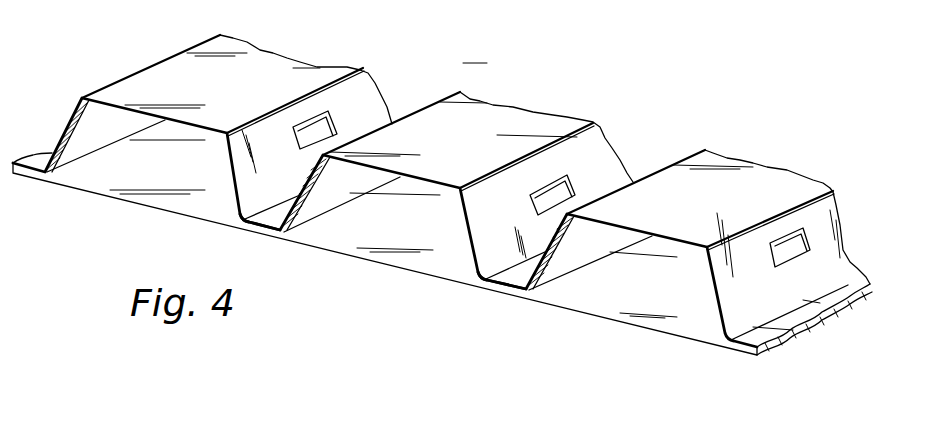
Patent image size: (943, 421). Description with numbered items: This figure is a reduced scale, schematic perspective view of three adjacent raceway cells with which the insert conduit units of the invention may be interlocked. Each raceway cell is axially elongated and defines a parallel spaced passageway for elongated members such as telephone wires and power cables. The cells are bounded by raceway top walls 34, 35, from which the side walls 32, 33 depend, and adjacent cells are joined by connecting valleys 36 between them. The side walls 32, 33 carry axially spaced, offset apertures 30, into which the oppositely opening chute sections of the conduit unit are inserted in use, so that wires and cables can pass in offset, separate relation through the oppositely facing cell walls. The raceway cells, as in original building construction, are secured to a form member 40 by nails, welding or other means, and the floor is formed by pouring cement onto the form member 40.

The aperture 30 is at (310, 122).
The side wall 32 is at (287, 184).
The side wall 33 is at (83, 143).
The raceway top wall 34 is at (183, 72).
The raceway top wall 35 is at (482, 130).
The connecting valley 36 is at (268, 220).
The form member 40 is at (390, 263).